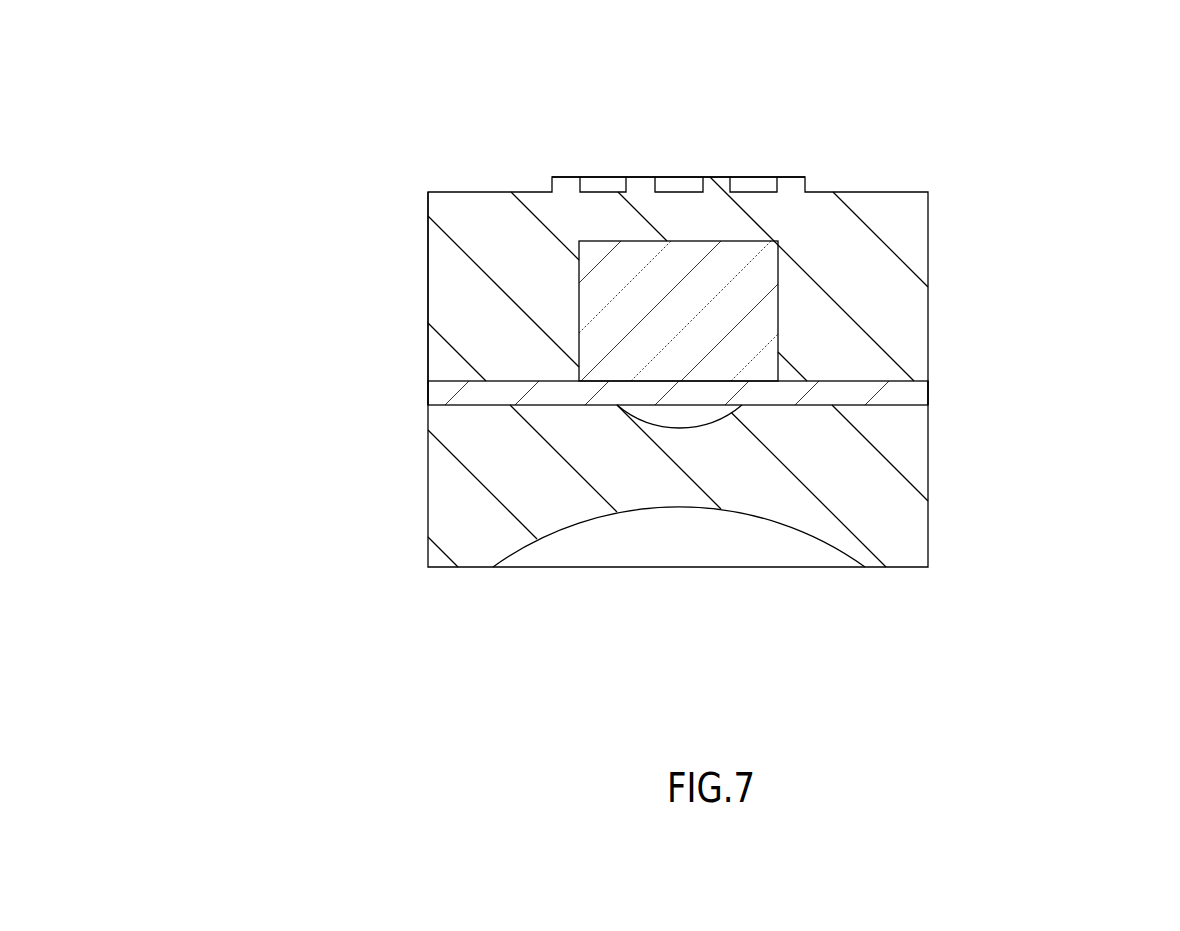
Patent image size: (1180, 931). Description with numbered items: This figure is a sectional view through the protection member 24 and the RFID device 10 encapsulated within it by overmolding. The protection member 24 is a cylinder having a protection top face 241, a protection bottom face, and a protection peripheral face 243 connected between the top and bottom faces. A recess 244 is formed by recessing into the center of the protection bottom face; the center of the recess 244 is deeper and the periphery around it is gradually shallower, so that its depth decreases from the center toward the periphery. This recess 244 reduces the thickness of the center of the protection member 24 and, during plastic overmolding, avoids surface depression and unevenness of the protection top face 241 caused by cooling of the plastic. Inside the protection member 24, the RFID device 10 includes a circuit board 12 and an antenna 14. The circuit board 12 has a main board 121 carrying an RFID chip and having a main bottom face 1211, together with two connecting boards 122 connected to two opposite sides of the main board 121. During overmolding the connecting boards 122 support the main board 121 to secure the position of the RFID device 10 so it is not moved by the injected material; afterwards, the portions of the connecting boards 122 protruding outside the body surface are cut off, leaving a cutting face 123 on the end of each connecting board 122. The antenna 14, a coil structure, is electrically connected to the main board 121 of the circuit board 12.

The RFID device 10 is at (627, 227).
The circuit board 12 is at (567, 632).
The main board 121 is at (665, 397).
The connecting board 122 is at (542, 397).
The cutting face 123 is at (428, 393).
The main bottom face 1211 is at (767, 405).
The antenna 14 is at (730, 300).
The protection member 24 is at (460, 190).
The protection top face 241 is at (883, 190).
The protection peripheral face 243 is at (428, 263).
The recess 244 is at (775, 524).